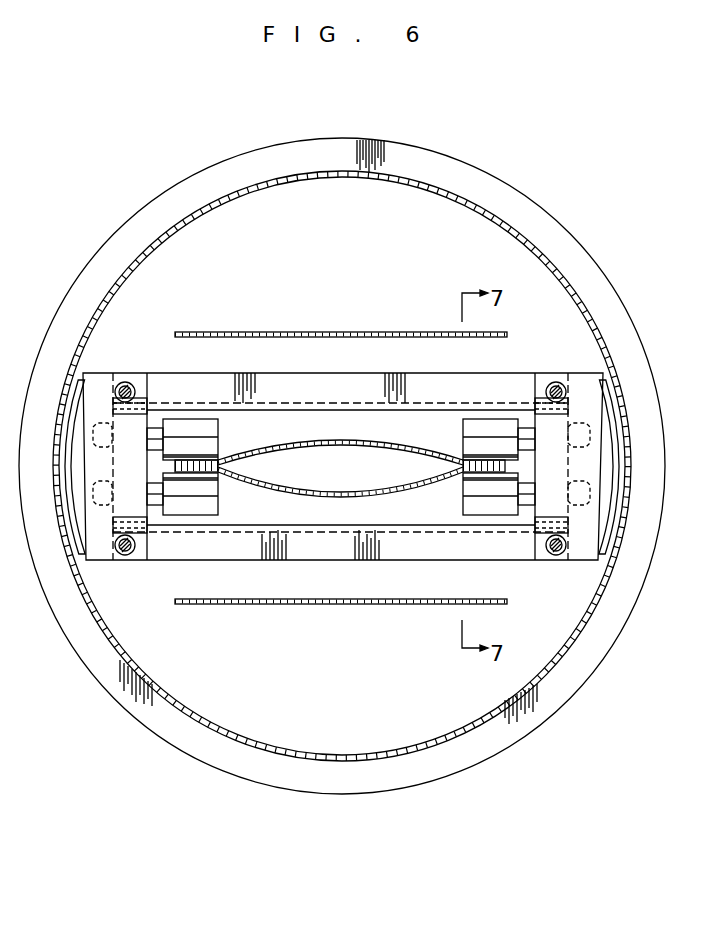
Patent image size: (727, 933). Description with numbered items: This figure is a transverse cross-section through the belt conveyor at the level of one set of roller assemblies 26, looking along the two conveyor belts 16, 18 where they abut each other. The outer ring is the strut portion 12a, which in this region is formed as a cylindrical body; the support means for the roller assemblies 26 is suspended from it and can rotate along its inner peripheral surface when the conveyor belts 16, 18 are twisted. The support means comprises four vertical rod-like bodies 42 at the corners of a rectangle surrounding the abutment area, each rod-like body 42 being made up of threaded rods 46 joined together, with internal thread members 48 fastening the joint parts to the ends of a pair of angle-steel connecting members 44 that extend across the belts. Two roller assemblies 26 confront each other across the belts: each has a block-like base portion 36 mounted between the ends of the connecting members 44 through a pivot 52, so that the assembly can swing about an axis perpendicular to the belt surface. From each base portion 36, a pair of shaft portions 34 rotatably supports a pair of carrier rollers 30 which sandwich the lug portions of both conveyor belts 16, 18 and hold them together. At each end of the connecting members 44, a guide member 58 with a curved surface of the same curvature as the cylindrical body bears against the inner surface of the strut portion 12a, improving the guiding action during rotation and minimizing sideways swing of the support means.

The strut portion 12a is at (553, 216).
The conveyor belt 16 is at (322, 331).
The conveyor belt 18 is at (380, 496).
The roller assembly 26 is at (200, 419).
The carrier roller 30 is at (220, 438).
The shaft portion 34 is at (524, 430).
The base portion 36 is at (110, 450).
The rod-like body 42 is at (134, 381).
The connecting member 44 is at (350, 390).
The rod 46 is at (137, 390).
The internal thread member 48 is at (568, 404).
The pivot 52 is at (115, 399).
The guide member 58 is at (617, 478).